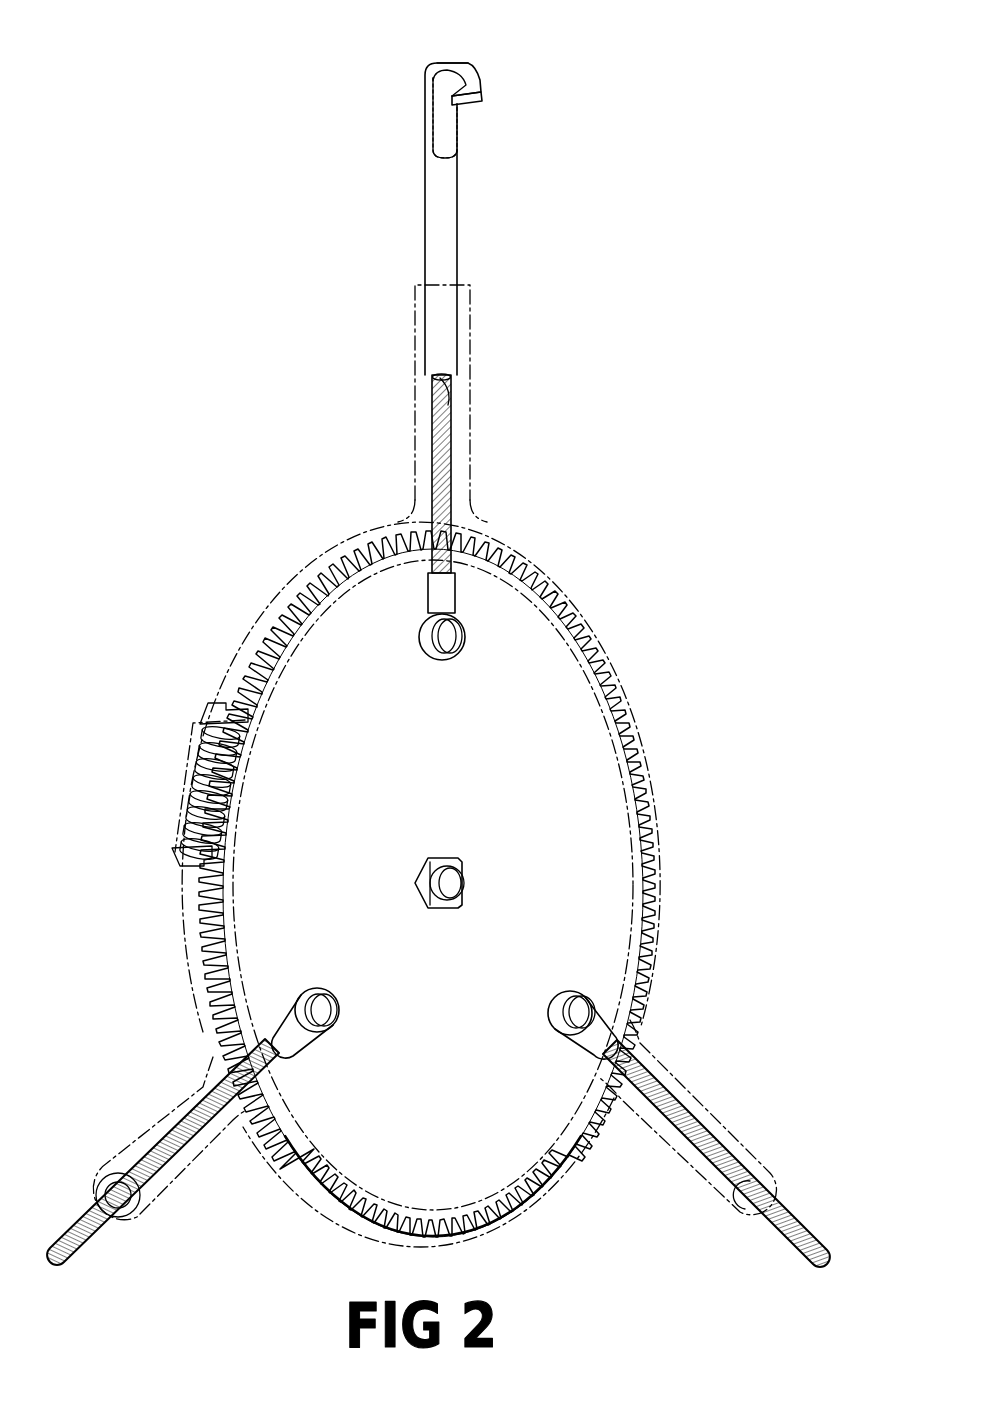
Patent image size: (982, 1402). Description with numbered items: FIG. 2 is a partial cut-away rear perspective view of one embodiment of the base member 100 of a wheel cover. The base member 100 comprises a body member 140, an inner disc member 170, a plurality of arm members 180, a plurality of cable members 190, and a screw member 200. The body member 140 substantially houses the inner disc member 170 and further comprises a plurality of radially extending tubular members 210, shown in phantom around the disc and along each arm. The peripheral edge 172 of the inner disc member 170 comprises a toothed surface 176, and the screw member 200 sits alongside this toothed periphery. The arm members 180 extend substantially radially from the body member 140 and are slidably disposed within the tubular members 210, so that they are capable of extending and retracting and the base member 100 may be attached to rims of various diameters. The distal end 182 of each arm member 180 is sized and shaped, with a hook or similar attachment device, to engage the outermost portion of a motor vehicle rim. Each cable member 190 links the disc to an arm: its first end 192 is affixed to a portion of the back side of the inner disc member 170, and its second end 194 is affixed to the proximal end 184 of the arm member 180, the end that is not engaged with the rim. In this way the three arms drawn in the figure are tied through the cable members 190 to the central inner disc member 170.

The base member 100 is at (188, 152).
The body member 140 is at (318, 550).
The inner disc member 170 is at (288, 730).
The peripheral edge 172 is at (333, 652).
The toothed surface 176 is at (215, 973).
The arm member 180 is at (452, 217).
The distal end 182 is at (462, 78).
The proximal end 184 is at (452, 382).
The cable member 190 is at (445, 487).
The first end 192 is at (455, 548).
The second end 194 is at (447, 408).
The screw member 200 is at (180, 832).
The tubular member 210 is at (472, 300).